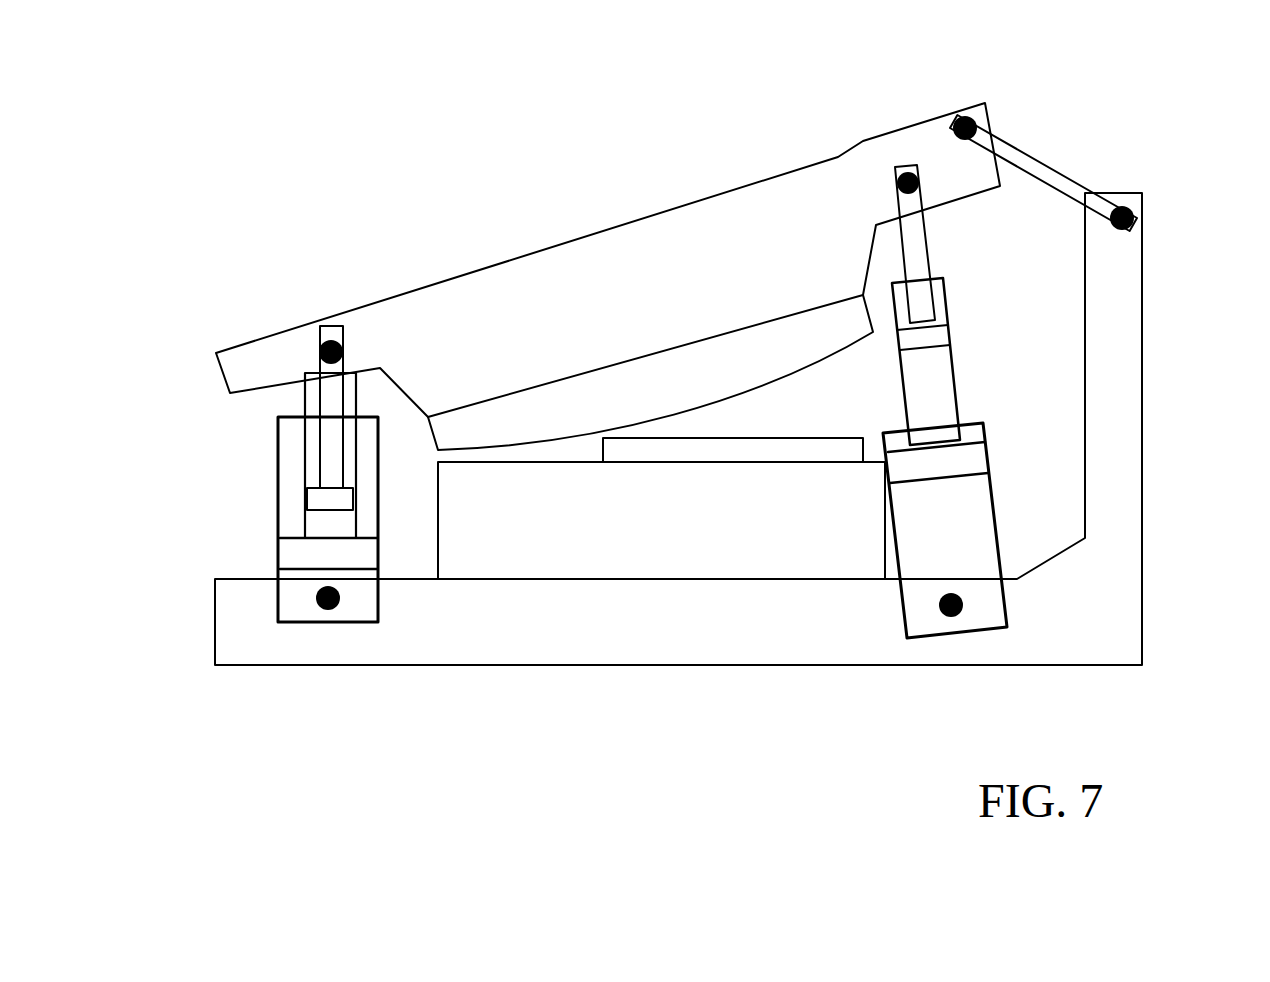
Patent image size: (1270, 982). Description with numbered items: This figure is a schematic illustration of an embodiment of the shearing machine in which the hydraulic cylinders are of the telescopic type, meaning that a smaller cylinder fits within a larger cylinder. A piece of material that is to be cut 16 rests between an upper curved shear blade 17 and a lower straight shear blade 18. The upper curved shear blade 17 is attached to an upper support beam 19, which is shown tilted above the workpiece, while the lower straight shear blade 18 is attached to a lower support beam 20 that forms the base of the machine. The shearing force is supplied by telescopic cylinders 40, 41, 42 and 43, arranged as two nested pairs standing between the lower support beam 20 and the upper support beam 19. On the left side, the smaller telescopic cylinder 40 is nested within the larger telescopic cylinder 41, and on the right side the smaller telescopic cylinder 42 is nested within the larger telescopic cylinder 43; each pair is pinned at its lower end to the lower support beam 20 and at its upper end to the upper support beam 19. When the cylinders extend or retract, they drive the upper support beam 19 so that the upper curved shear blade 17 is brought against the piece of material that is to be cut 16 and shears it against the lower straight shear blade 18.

The piece of material that is to be cut 16 is at (733, 450).
The upper curved shear blade 17 is at (603, 415).
The lower straight shear blade 18 is at (662, 532).
The upper support beam 19 is at (439, 309).
The lower support beam 20 is at (1105, 627).
The telescopic cylinder 40 is at (315, 393).
The telescopic cylinder 41 is at (365, 470).
The telescopic cylinder 42 is at (945, 395).
The telescopic cylinder 43 is at (963, 500).